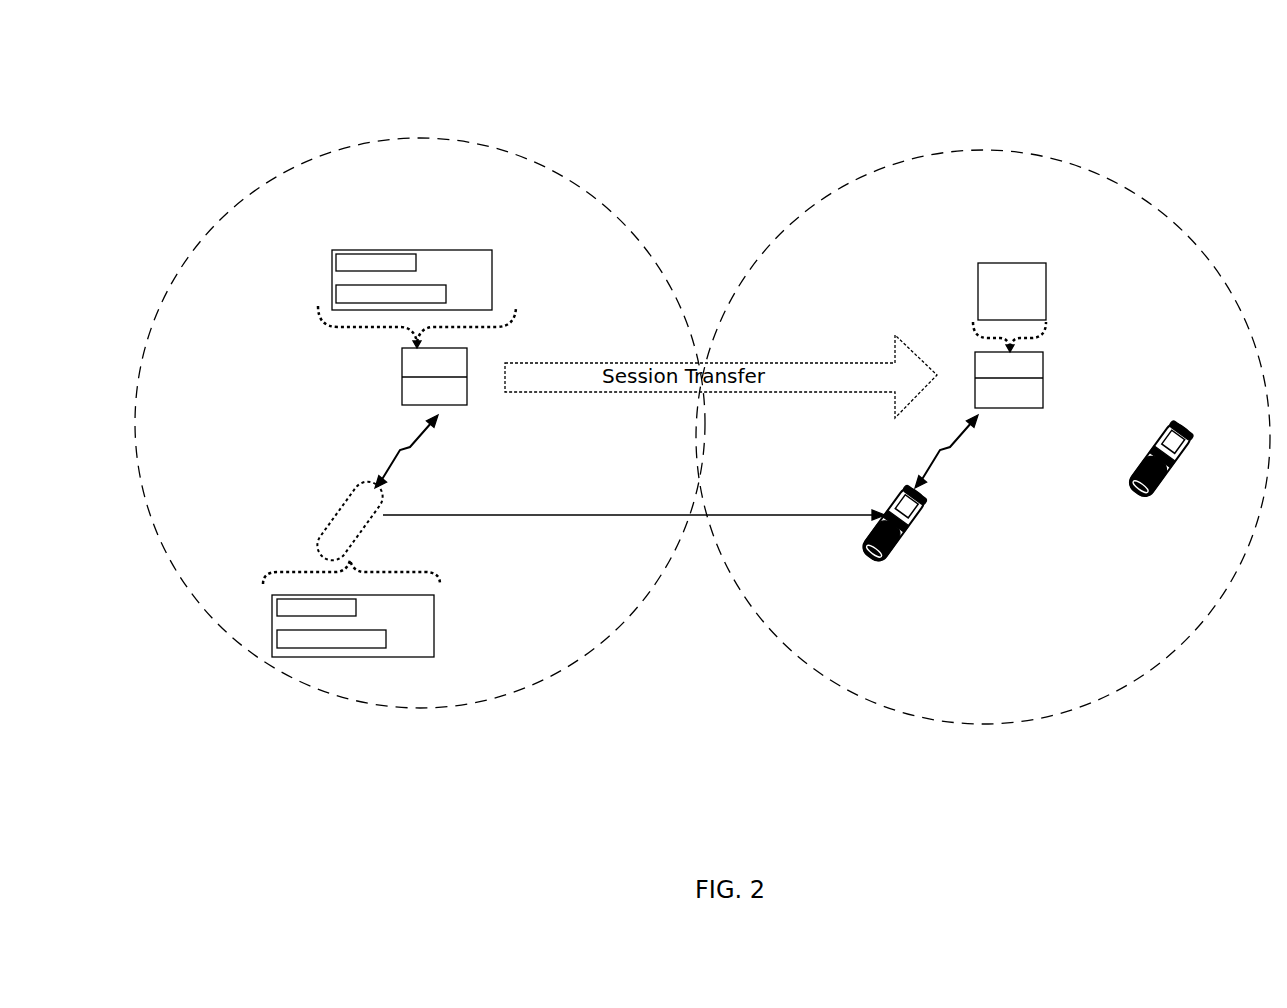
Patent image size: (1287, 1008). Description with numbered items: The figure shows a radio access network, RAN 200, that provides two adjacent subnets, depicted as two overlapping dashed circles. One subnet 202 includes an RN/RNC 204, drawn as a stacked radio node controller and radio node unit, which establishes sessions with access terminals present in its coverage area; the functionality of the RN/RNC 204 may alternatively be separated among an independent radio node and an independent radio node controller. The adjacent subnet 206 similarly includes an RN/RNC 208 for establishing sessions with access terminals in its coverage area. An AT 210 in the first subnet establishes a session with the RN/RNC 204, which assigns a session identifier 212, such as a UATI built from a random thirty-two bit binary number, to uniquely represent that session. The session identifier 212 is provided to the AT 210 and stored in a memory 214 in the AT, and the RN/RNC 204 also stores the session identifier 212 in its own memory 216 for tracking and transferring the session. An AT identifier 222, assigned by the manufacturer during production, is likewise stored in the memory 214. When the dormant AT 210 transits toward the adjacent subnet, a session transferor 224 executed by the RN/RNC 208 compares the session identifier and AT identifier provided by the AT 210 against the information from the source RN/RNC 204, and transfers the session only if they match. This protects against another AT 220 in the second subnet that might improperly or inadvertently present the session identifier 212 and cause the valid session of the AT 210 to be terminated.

The RAN 200 is at (1009, 54).
The subnet 202 is at (507, 152).
The RN/RNC 204 is at (467, 405).
The adjacent subnet 206 is at (1062, 163).
The RN/RNC 208 is at (1043, 378).
The AT 210 is at (367, 520).
The session identifier 212 is at (446, 294).
The memory 214 is at (435, 620).
The memory 216 is at (430, 250).
The AT 220 is at (1133, 488).
The AT identifier 222 is at (416, 262).
The session transferor 224 is at (978, 278).